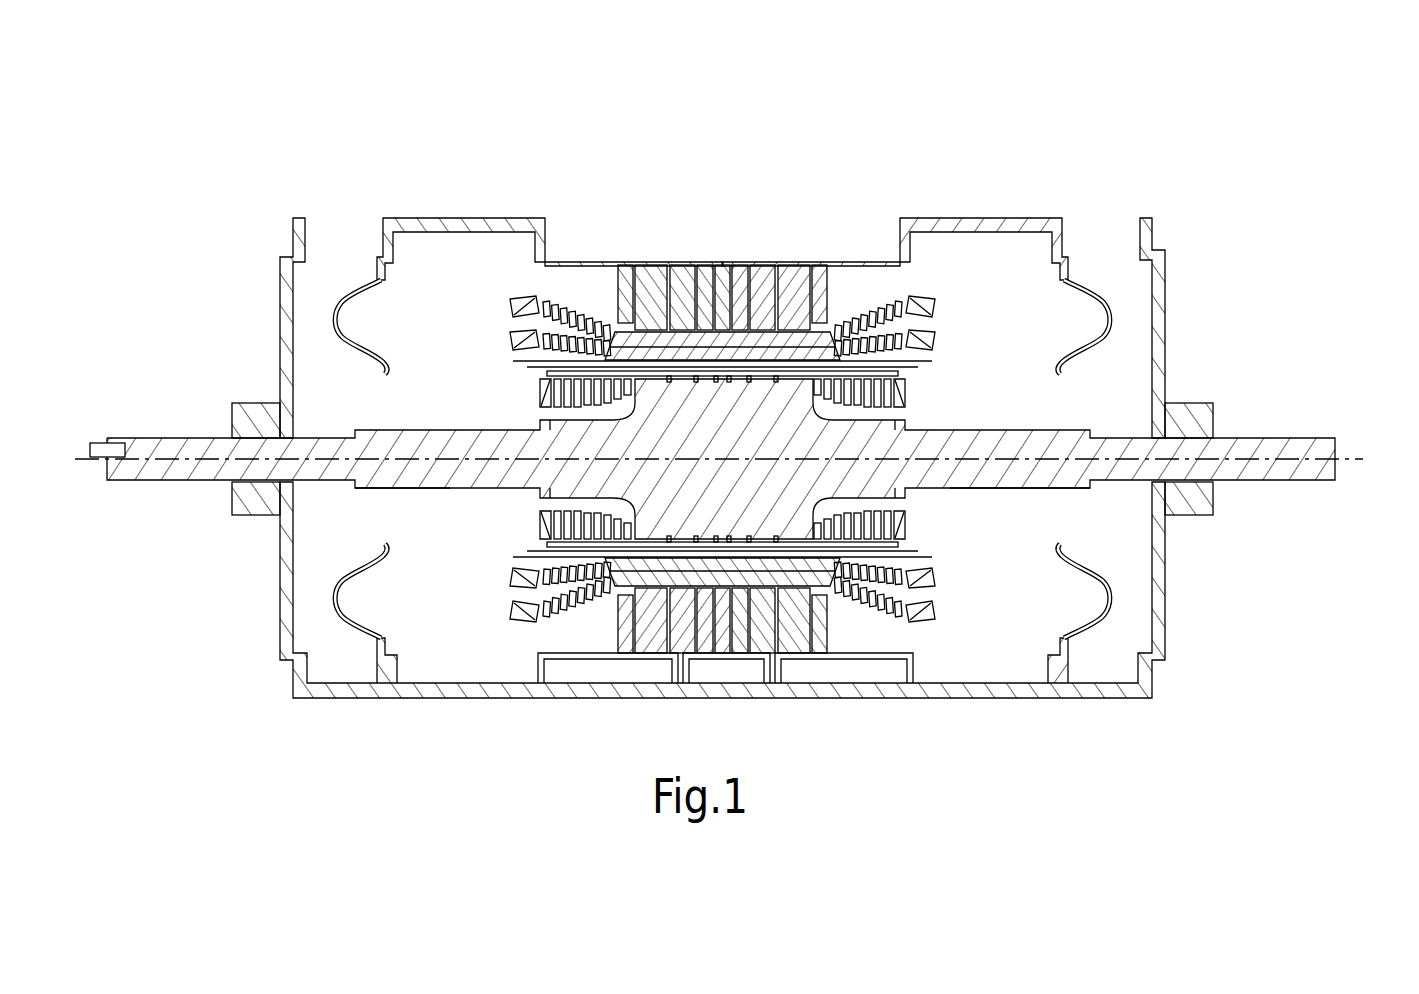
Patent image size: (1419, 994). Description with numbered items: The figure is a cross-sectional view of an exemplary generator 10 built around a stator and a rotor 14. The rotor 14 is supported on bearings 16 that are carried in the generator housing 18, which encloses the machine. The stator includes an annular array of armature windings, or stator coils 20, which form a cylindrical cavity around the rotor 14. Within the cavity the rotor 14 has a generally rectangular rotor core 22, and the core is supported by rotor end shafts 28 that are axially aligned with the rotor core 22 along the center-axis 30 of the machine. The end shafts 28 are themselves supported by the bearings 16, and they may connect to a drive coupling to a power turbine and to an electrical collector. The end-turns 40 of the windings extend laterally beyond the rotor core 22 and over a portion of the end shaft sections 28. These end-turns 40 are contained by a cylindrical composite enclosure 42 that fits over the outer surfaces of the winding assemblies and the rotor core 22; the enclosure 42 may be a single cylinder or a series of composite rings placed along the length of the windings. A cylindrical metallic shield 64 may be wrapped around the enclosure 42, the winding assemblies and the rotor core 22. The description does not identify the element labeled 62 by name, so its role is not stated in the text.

The generator 10 is at (815, 146).
The rotor 14 is at (952, 438).
The bearings 16 is at (263, 500).
The generator housing 18 is at (280, 333).
The armature windings (stator coils) 20 is at (903, 318).
The rotor core 22 is at (708, 472).
The rotor end shafts 28 is at (398, 490).
The center-axis 30 is at (1352, 460).
The end-turns 40 is at (900, 374).
The cylindrical composite enclosure 42 is at (905, 556).
The upper stator assembly 62 is at (502, 372).
The cylindrical metallic shield 64 is at (552, 557).